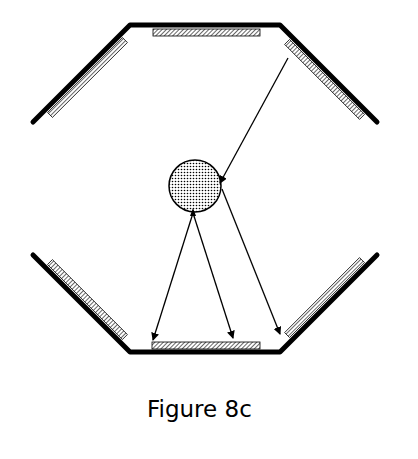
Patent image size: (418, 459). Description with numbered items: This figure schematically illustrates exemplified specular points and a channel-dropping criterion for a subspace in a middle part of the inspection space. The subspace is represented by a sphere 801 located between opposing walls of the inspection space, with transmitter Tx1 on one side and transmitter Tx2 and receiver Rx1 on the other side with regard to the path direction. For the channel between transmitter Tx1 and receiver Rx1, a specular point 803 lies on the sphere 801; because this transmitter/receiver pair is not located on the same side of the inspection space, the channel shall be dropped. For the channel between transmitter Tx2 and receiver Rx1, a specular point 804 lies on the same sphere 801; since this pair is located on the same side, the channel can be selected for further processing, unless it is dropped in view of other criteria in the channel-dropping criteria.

The sphere 801 is at (195, 186).
The specular point 803 is at (221, 188).
The specular point 804 is at (182, 215).
The transmitter Tx1 is at (324, 42).
The transmitter Tx2 is at (159, 374).
The receiver Rx1 is at (238, 372).